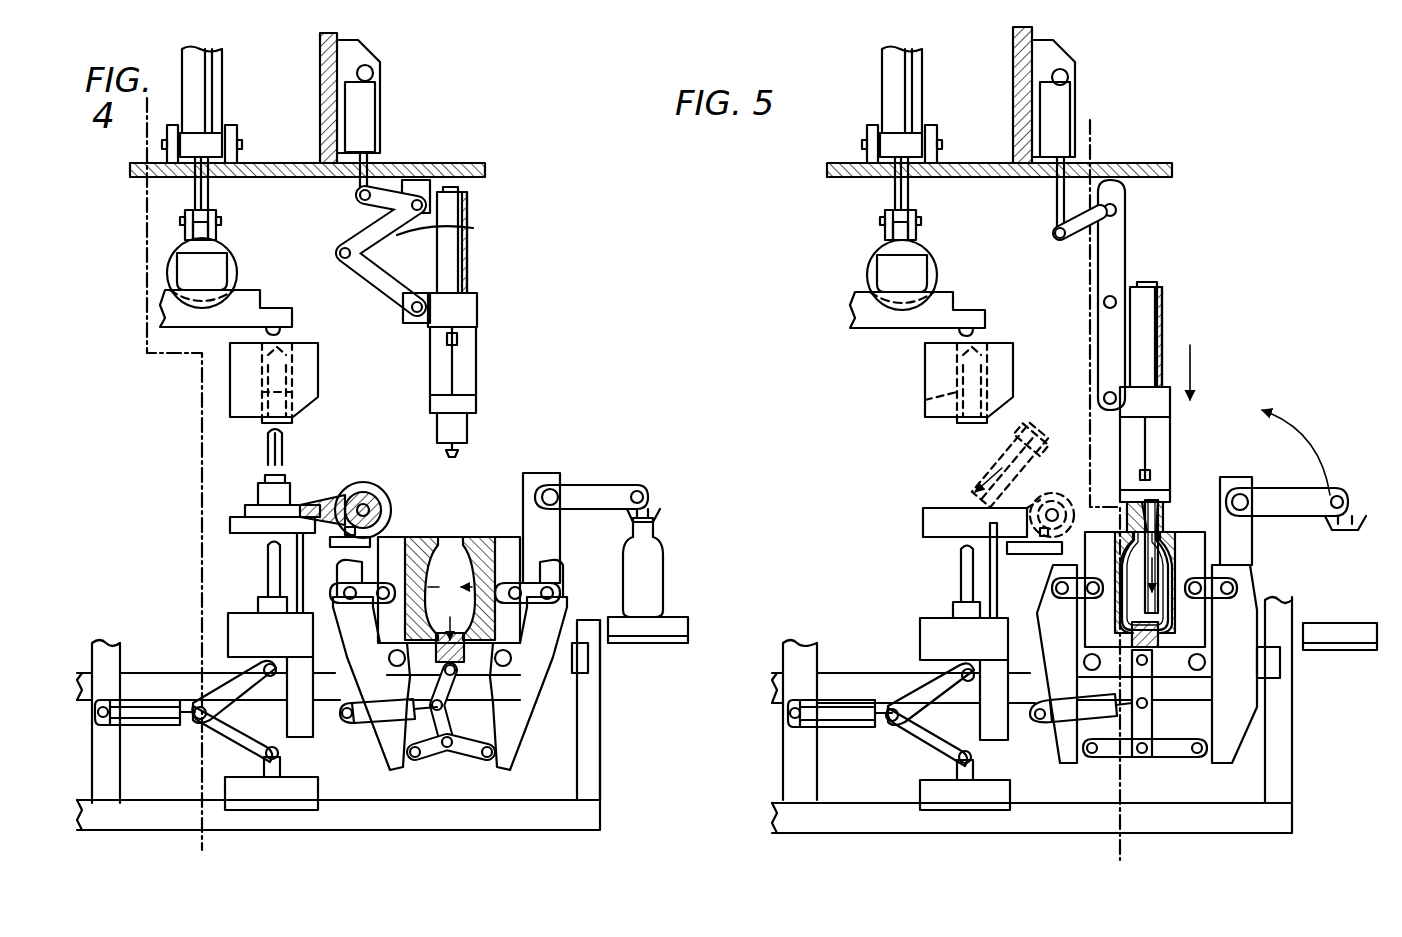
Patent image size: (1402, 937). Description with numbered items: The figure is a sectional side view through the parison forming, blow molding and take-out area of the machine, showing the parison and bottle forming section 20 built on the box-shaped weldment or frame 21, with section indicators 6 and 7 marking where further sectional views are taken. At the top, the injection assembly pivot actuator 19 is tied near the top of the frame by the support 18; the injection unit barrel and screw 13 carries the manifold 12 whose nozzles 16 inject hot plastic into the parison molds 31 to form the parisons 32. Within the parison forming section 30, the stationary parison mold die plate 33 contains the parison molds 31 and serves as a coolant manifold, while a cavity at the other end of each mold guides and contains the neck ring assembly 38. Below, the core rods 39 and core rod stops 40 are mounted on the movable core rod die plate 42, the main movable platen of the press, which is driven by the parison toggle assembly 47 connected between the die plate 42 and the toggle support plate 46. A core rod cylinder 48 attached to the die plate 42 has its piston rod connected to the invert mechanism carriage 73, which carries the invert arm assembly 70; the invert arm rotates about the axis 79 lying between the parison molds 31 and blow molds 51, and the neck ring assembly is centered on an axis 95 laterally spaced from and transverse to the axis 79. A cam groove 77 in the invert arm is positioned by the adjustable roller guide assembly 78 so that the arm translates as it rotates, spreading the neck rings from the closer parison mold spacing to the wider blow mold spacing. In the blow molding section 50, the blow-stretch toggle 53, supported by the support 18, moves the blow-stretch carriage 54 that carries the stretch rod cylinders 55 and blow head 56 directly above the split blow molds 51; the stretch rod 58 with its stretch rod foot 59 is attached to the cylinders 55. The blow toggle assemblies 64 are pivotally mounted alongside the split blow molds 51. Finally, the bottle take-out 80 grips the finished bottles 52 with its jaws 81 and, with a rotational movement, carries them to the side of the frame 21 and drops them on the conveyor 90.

In FIG. 4, the section line 6- 6 is at (147, 98).
In FIG. 5, the section line 7- 7 is at (1090, 120).
In FIG. 4, the manifold 12 is at (278, 308).
In FIG. 5, the manifold 12 is at (935, 293).
In FIG. 4, the barrel and screw 13 is at (230, 262).
In FIG. 5, the barrel and screw 13 is at (926, 271).
In FIG. 4, the nozzles 16 is at (290, 330).
In FIG. 5, the nozzles 16 is at (1012, 320).
In FIG. 4, the support 18 is at (438, 164).
In FIG. 5, the support 18 is at (999, 138).
In FIG. 4, the injection assembly pivot actuator 19 is at (208, 45).
In FIG. 5, the injection assembly pivot actuator 19 is at (919, 142).
In FIG. 5, the parison and bottle forming section 20 is at (826, 379).
In FIG. 5, the box-shaped weldment 21 is at (1280, 782).
In FIG. 4, the parison forming section 30 is at (185, 453).
In FIG. 4, the parison molds 31 is at (292, 392).
In FIG. 5, the parison molds 31 is at (912, 416).
In FIG. 4, the parisons 32 is at (282, 445).
In FIG. 4, the stationary parison mold die plate 33 is at (318, 362).
In FIG. 5, the stationary parison mold die plate 33 is at (995, 383).
In FIG. 4, the neck ring assembly 38 is at (285, 488).
In FIG. 5, the neck ring assembly 38 is at (1030, 460).
In FIG. 4, the core rods 39 is at (268, 560).
In FIG. 5, the core rods 39 is at (936, 574).
In FIG. 4, the core rod stops 40 is at (262, 605).
In FIG. 5, the core rod stops 40 is at (930, 600).
In FIG. 4, the movable core rod die plate 42 is at (235, 642).
In FIG. 5, the movable core rod die plate 42 is at (964, 639).
In FIG. 4, the toggle support plate 46 is at (303, 803).
In FIG. 5, the toggle support plate 46 is at (990, 828).
In FIG. 4, the parison toggle assembly 47 is at (235, 742).
In FIG. 5, the parison toggle assembly 47 is at (881, 722).
In FIG. 4, the core rod cylinder 48 is at (303, 598).
In FIG. 5, the core rod cylinder 48 is at (1015, 570).
In FIG. 4, the blow molding section 50 is at (508, 374).
In FIG. 5, the blow molding section 50 is at (1215, 233).
In FIG. 4, the blow molds 51 is at (485, 537).
In FIG. 5, the blow molds 51 is at (1175, 535).
In FIG. 4, the bottles 52 is at (656, 580).
In FIG. 5, the bottles 52 is at (1163, 550).
In FIG. 4, the blow-stretch toggle 53 is at (467, 235).
In FIG. 5, the blow-stretch toggle 53 is at (1125, 241).
In FIG. 4, the blow-stretch carriage 54 is at (467, 266).
In FIG. 5, the stretch rod cylinders 55 is at (1162, 315).
In FIG. 5, the blow head 56 is at (1167, 512).
In FIG. 5, the stretch rod 58 is at (1165, 565).
In FIG. 4, the stretch rod foot 59 is at (460, 450).
In FIG. 5, the stretch rod foot 59 is at (1158, 628).
In FIG. 4, the blow toggle assemblies 64 is at (527, 727).
In FIG. 5, the blow toggle assemblies 64 is at (1243, 690).
In FIG. 4, the invert arm assembly 70 is at (368, 478).
In FIG. 4, the invert mechanism carriage 73 is at (230, 525).
In FIG. 5, the invert mechanism carriage 73 is at (946, 520).
In FIG. 4, the cam groove 77 is at (372, 490).
In FIG. 5, the cam groove 77 is at (1070, 498).
In FIG. 4, the adjustable roller guide assembly 78 is at (372, 542).
In FIG. 5, the adjustable roller guide assembly 78 is at (1060, 552).
In FIG. 4, the pivot axis 79 is at (372, 510).
In FIG. 4, the bottle take-out 80 is at (572, 485).
In FIG. 5, the bottle take-out 80 is at (1256, 490).
In FIG. 4, the jaws 81 is at (660, 518).
In FIG. 5, the jaws 81 is at (1366, 518).
In FIG. 4, the conveyor 90 is at (668, 625).
In FIG. 5, the conveyor 90 is at (1345, 638).
In FIG. 4, the neck ring axis 95 is at (268, 487).